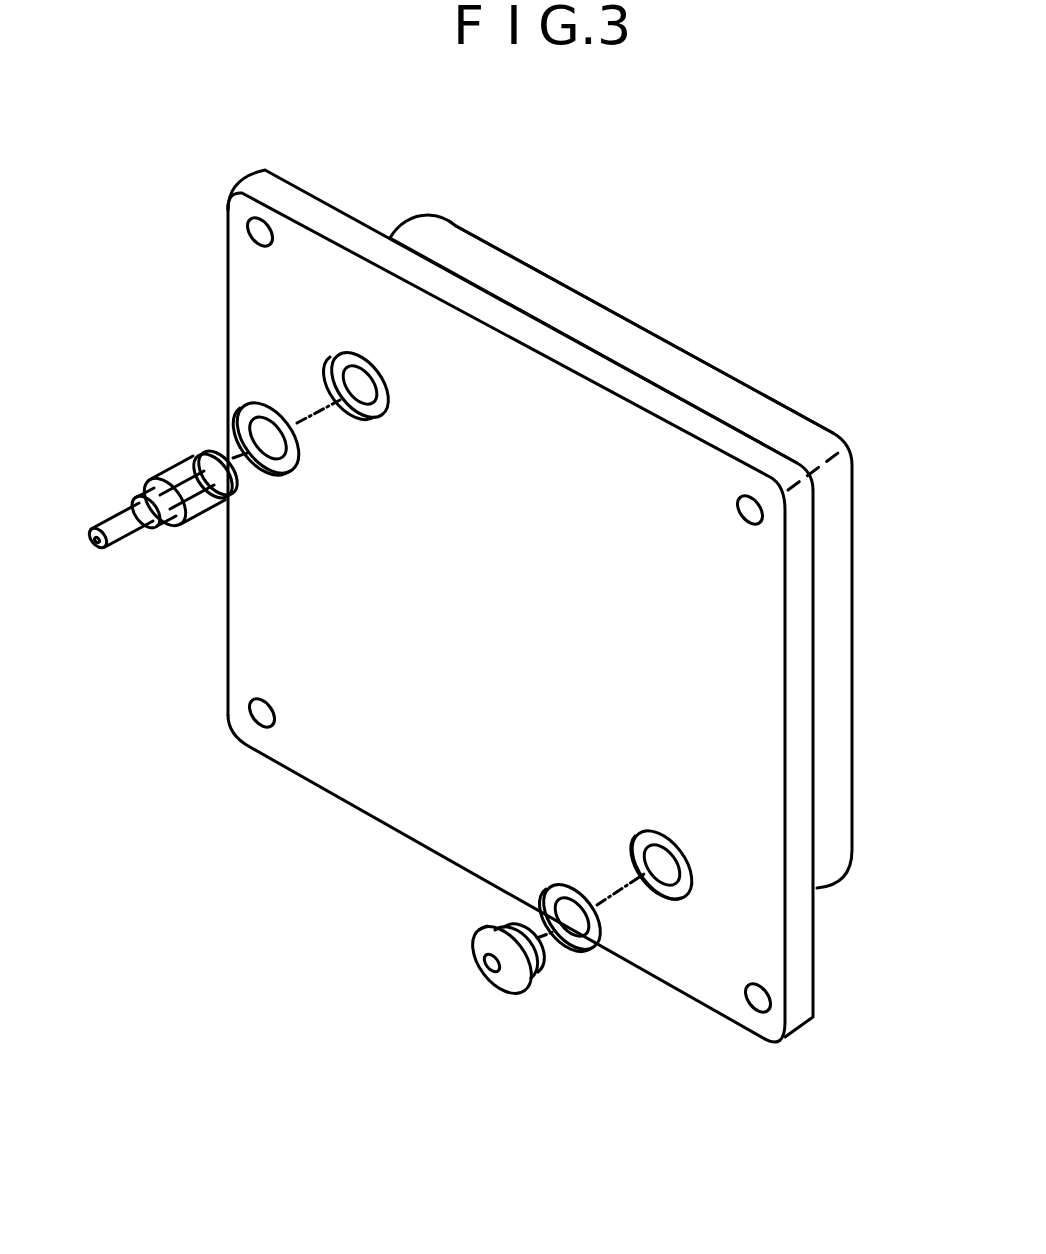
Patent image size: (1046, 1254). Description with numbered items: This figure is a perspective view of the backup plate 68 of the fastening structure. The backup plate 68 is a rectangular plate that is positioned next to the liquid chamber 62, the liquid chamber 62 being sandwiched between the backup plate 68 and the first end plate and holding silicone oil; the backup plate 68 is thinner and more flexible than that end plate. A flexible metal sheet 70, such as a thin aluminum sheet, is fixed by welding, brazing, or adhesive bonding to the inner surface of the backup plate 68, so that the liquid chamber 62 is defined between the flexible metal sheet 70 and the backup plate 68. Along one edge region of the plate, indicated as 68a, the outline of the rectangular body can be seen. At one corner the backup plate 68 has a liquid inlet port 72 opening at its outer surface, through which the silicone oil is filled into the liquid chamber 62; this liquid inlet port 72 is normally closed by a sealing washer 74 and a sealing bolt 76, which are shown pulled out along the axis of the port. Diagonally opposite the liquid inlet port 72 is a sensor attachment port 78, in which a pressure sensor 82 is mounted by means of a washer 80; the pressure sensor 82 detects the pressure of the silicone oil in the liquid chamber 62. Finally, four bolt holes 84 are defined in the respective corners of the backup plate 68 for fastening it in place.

The liquid chamber 62 is at (822, 618).
The backup plate 68 is at (607, 360).
The bottom edge of mounting plate 68a is at (395, 775).
The flexible metal sheet 70 is at (735, 400).
The liquid inlet port 72 is at (658, 836).
The sealing washer 74 is at (577, 952).
The sealing bolt 76 is at (500, 989).
The sensor attachment port 78 is at (372, 420).
The washer 80 is at (280, 472).
The pressure sensor 82 is at (200, 522).
The bolt holes 84 is at (262, 247).